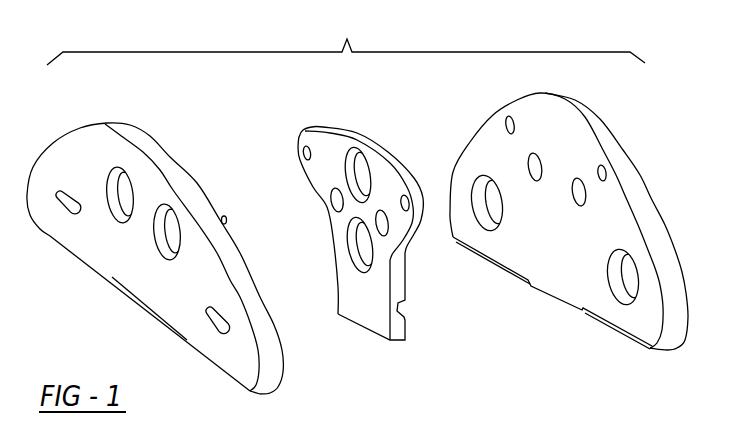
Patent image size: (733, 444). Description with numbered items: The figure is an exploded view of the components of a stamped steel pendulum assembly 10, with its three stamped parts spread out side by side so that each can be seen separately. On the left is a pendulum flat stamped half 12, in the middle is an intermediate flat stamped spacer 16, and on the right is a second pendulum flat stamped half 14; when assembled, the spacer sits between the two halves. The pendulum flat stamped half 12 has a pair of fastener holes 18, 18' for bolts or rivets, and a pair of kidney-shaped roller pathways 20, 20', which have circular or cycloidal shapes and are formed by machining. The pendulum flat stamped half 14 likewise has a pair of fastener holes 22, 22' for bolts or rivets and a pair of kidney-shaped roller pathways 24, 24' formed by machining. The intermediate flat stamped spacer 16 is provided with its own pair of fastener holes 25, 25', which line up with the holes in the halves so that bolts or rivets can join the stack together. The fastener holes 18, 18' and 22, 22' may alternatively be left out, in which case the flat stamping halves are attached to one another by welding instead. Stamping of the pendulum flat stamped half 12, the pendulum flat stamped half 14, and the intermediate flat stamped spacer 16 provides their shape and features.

The pendulum assembly 10 is at (346, 39).
The pendulum flat stamped half 12 is at (118, 260).
The pendulum flat stamped half 14 is at (647, 215).
The intermediate flat stamped spacer 16 is at (373, 320).
The fastener hole 18 is at (138, 150).
The fastener hole 18' is at (193, 187).
The kidney-shaped roller pathway 20 is at (53, 239).
The kidney-shaped roller pathway 20' is at (193, 364).
The fastener hole 22 is at (580, 125).
The fastener hole 22' is at (628, 154).
The kidney-shaped roller pathway 24 is at (471, 157).
The kidney-shaped roller pathway 24' is at (615, 325).
The fastener hole 25 is at (298, 200).
The fastener hole 25' is at (429, 252).